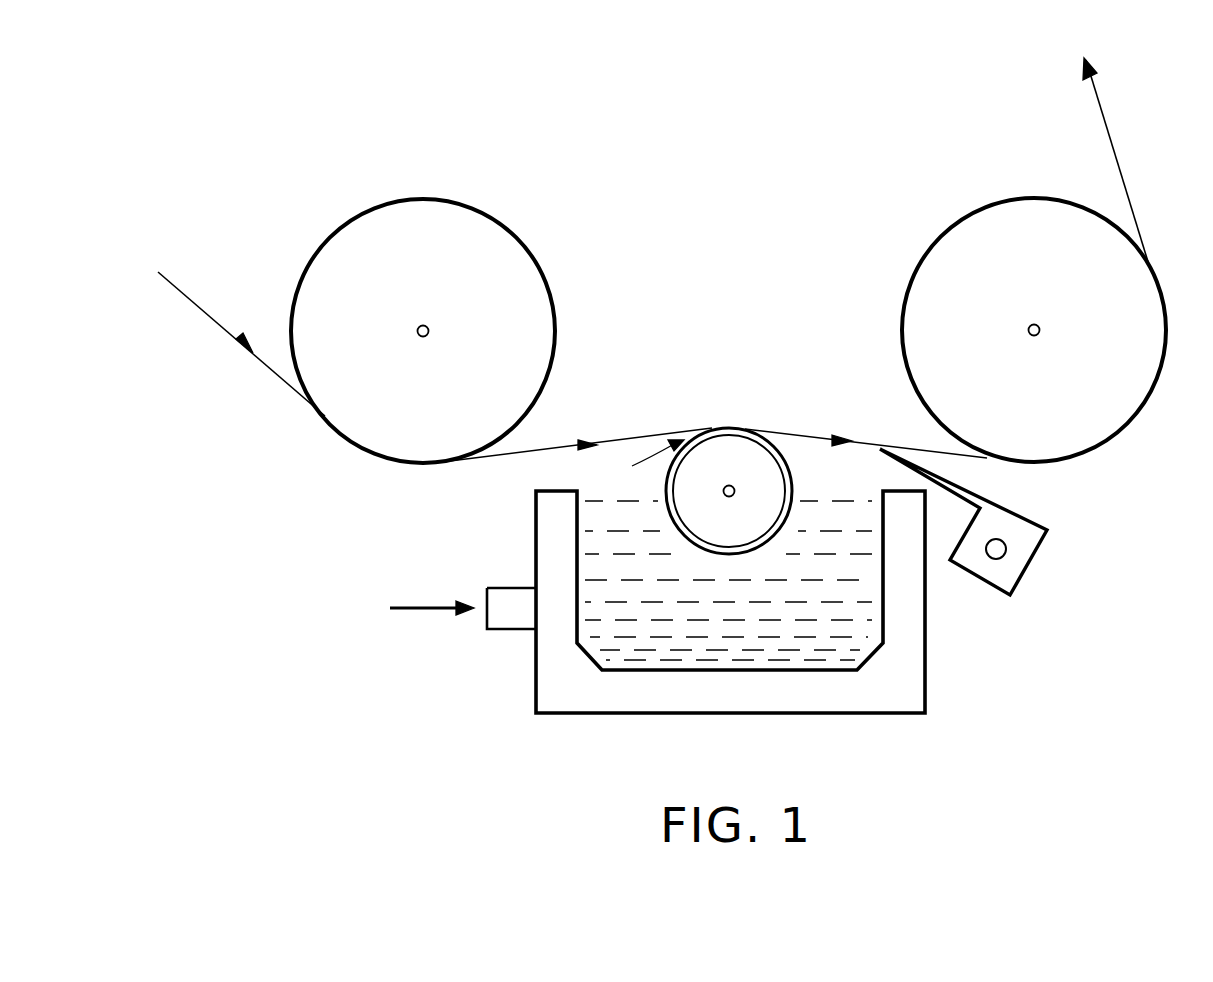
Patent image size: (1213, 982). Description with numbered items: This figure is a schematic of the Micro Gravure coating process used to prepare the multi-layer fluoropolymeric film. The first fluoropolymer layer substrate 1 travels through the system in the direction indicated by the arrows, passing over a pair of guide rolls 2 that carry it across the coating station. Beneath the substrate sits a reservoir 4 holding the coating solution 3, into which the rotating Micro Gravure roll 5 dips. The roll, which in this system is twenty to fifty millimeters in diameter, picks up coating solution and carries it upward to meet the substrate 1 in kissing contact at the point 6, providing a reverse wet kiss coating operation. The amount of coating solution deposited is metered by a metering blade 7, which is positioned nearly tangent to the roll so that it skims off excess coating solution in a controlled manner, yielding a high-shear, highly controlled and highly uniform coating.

The first fluoropolymer layer substrate 1 is at (189, 297).
The guide rolls 2 is at (502, 217).
The coating solution 3 is at (810, 613).
The reservoir 4 is at (727, 715).
The rotating Micro Gravure roll 5 is at (722, 466).
The point of kissing contact 6 is at (646, 462).
The metering blade 7 is at (1027, 513).